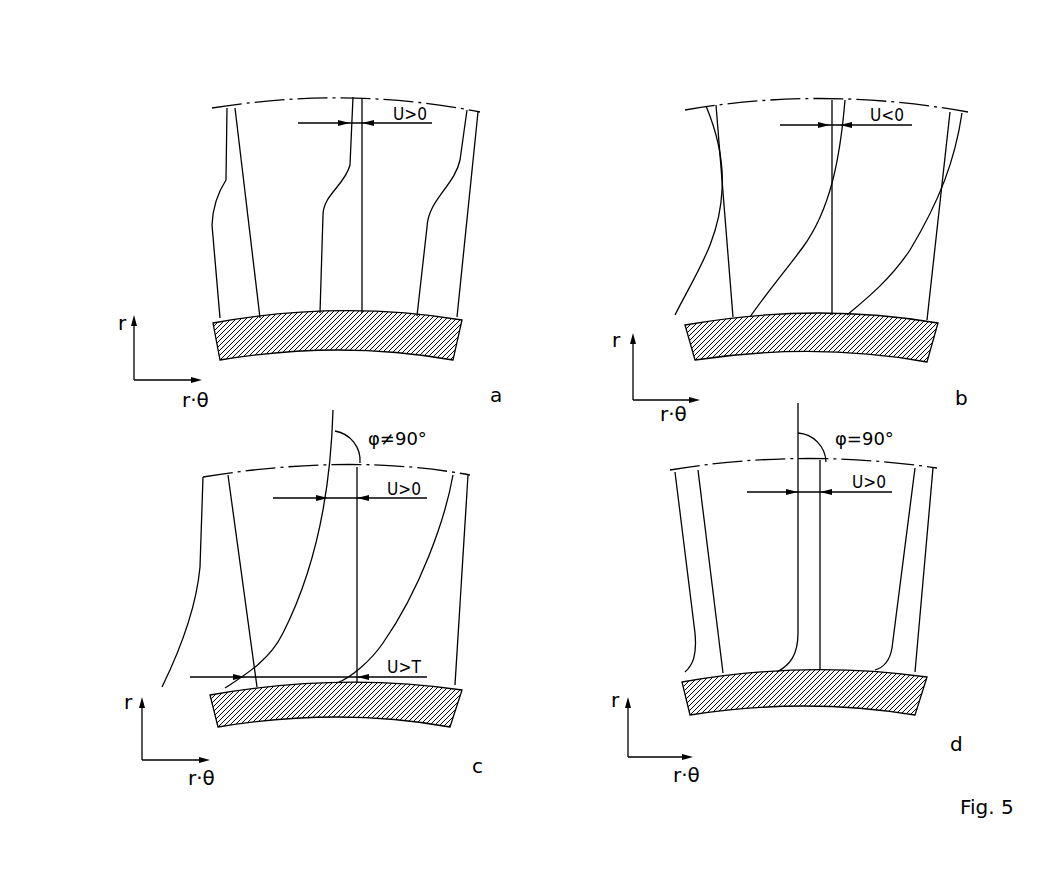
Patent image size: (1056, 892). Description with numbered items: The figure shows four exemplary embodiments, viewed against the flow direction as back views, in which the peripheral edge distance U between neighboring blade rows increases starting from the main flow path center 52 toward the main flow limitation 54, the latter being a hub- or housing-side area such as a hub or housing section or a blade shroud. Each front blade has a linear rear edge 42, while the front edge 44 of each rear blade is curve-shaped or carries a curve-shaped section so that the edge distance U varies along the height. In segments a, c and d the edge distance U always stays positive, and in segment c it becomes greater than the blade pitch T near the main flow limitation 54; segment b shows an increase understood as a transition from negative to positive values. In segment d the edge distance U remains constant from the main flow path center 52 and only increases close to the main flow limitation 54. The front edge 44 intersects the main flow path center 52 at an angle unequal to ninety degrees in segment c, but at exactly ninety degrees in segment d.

The rear edge 42 is at (365, 173).
The front edge 44 is at (322, 267).
The main flow path center 52 is at (467, 110).
The main flow limitation 54 is at (447, 333).